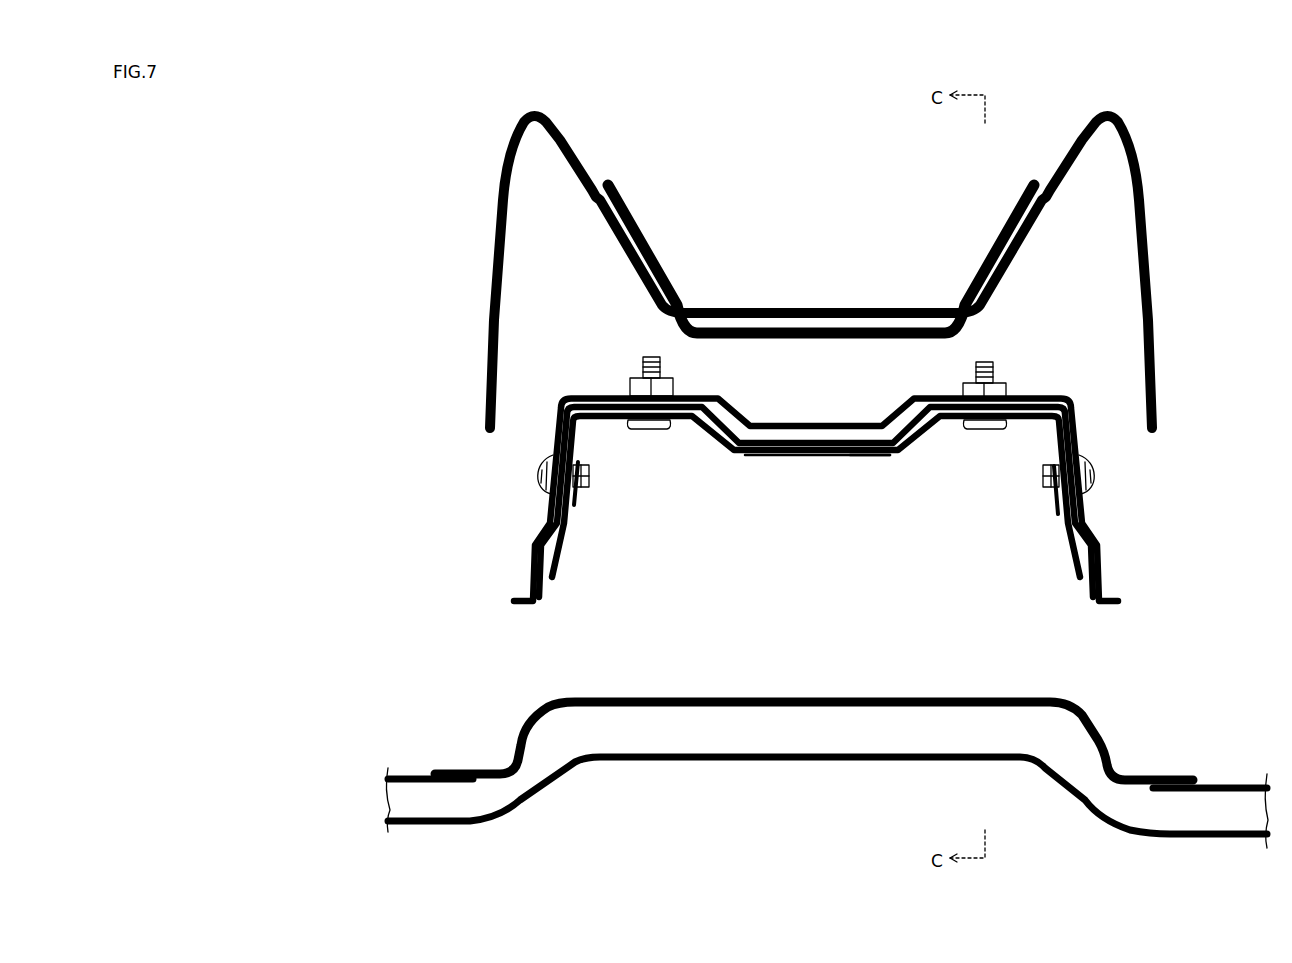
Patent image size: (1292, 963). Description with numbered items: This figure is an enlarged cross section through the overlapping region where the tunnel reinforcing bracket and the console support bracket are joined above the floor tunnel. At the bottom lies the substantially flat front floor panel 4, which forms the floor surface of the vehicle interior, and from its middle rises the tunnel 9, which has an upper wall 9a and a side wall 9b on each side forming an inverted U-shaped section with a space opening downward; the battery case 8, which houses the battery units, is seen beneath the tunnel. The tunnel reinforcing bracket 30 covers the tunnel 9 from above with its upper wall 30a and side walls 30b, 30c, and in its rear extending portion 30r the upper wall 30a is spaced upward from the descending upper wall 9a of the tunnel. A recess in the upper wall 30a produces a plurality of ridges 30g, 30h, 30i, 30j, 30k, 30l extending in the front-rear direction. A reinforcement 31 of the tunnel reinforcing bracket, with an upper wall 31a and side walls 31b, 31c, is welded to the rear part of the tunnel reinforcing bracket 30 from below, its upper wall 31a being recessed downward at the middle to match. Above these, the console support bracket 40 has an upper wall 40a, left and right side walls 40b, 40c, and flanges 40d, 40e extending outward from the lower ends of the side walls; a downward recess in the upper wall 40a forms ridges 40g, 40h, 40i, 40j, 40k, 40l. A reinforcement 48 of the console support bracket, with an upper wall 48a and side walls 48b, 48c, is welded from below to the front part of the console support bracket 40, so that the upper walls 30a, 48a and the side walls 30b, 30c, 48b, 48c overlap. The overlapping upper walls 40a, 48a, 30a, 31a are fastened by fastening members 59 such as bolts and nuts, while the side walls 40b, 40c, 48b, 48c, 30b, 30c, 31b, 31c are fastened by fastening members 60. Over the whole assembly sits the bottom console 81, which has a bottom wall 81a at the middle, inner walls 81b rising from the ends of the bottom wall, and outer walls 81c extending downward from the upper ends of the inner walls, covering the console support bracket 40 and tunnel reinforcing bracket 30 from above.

The bottom console 81 is at (1154, 192).
The bottom wall 81a is at (845, 330).
The inner walls 81b is at (606, 236).
The outer walls 81c is at (488, 292).
The console support bracket 40 is at (802, 418).
The upper wall 40a is at (1030, 396).
The side wall 40b is at (1080, 430).
The side wall 40c is at (555, 428).
The flange 40d is at (1118, 603).
The flange 40e is at (516, 601).
The ridge 40g is at (1068, 397).
The ridge 40h is at (905, 400).
The ridge 40i is at (876, 423).
The ridge 40j is at (752, 424).
The ridge 40k is at (722, 398).
The ridge 40l is at (566, 396).
The tunnel reinforcing bracket 30 is at (834, 422).
The upper wall 30a is at (688, 412).
The side wall 30b is at (1076, 562).
The side wall 30c is at (559, 554).
The ridge 30g is at (1058, 412).
The ridge 30h is at (926, 430).
The ridge 30i is at (894, 454).
The ridge 30j is at (738, 454).
The ridge 30k is at (705, 412).
The ridge 30l is at (574, 410).
The rear extending portion 30r is at (1078, 579).
The reinforcement of the console support bracket 48 is at (814, 454).
The upper wall 48a is at (952, 404).
The side wall 48b is at (1074, 452).
The side wall 48c is at (546, 512).
The reinforcement of the tunnel reinforcing bracket 31 is at (778, 456).
The upper wall 31a is at (868, 456).
The side wall 31b is at (1057, 512).
The side wall 31c is at (575, 504).
The fastening members 59 is at (646, 430).
The fastening members 60 is at (539, 474).
The tunnel 9 is at (798, 698).
The upper wall 9a is at (962, 698).
The side wall 9b is at (517, 746).
The battery case 8 is at (845, 754).
The front floor panel 4 is at (407, 776).